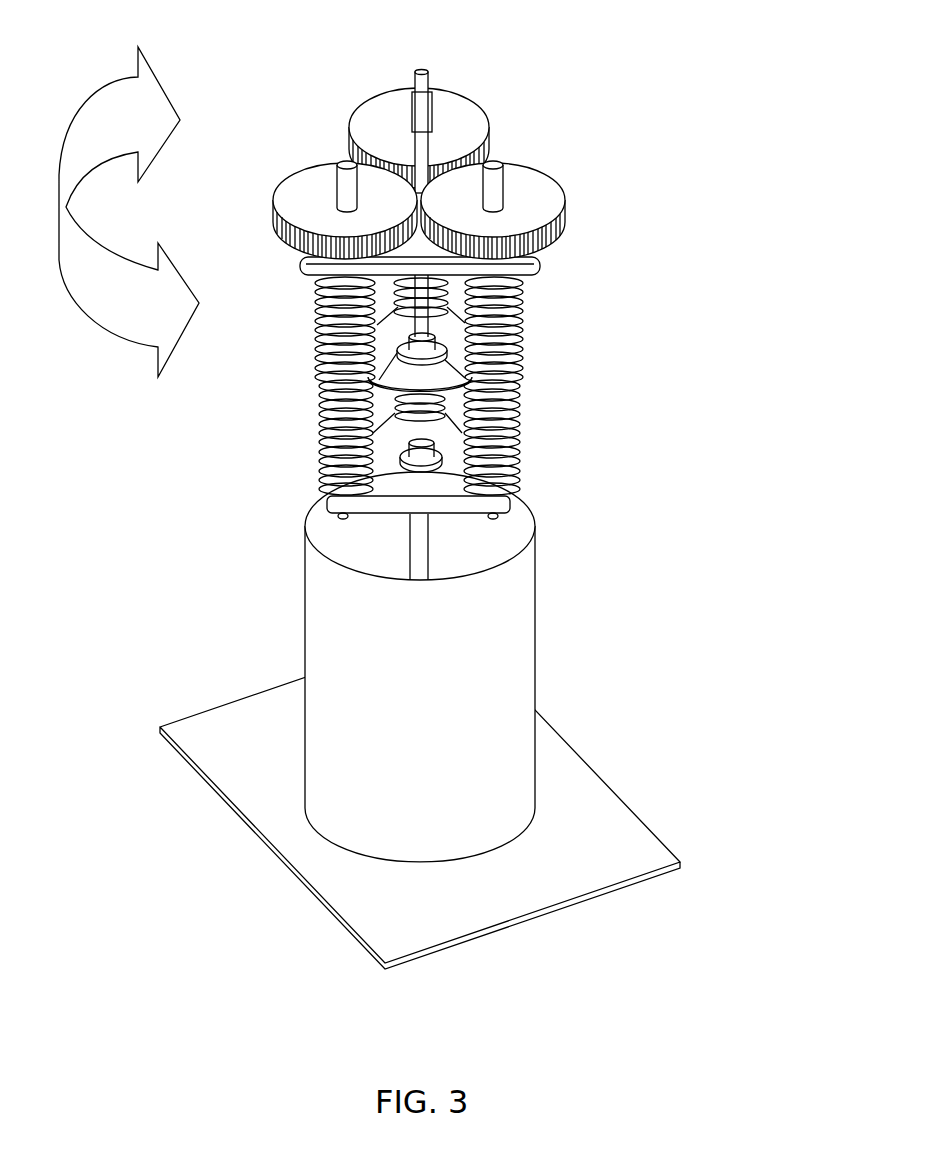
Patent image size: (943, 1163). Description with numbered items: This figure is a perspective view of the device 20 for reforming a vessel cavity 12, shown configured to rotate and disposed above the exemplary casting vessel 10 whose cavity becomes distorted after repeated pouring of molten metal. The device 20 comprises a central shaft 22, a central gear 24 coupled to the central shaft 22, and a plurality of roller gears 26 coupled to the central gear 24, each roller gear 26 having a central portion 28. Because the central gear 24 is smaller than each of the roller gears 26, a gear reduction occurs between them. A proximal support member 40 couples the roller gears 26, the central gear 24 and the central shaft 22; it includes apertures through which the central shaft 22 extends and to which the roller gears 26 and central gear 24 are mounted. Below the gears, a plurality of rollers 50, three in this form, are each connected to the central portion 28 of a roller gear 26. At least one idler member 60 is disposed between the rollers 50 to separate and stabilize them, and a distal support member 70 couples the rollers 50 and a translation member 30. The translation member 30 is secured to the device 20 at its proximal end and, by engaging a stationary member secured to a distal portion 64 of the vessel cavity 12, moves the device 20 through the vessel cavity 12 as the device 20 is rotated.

The casting vessel 10 is at (367, 667).
The vessel cavity 12 is at (391, 551).
The device 20 is at (457, 263).
The central shaft 22 is at (423, 188).
The central gear 24 is at (419, 187).
The roller gears 26 is at (423, 149).
The central portion 28 is at (315, 197).
The translation member 30 is at (425, 538).
The proximal support member 40 is at (430, 252).
The rollers 50 is at (510, 292).
The idler member 60 is at (447, 368).
The distal portion 64 is at (237, 752).
The distal support member 70 is at (447, 477).